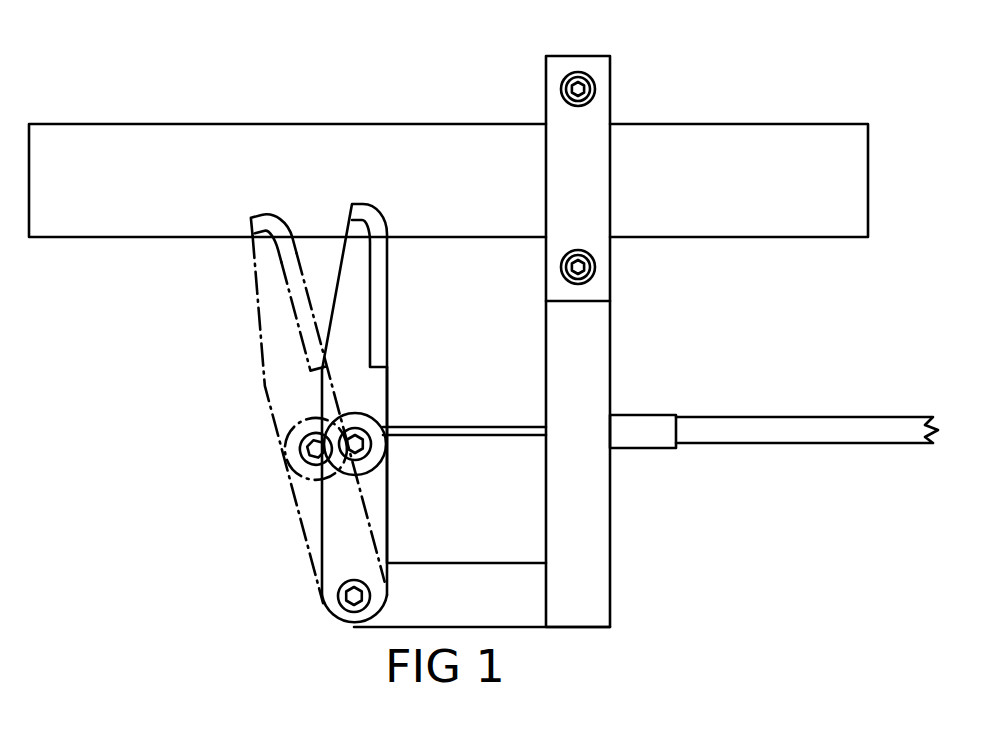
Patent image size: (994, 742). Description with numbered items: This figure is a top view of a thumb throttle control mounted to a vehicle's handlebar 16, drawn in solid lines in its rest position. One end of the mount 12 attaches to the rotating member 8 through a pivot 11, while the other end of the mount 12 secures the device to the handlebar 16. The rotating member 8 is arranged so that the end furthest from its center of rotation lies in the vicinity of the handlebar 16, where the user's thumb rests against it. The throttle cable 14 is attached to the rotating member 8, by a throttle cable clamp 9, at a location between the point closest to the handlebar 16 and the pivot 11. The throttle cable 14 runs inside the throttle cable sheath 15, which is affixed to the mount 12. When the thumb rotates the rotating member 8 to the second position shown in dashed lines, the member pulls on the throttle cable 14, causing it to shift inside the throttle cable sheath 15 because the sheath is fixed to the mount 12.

The rotating member 8 is at (352, 378).
The throttle cable clamp 9 is at (342, 453).
The pivot 11 is at (338, 597).
The mount 12 is at (579, 353).
The throttle cable 14 is at (475, 428).
The throttle cable sheath 15 is at (723, 430).
The handlebar 16 is at (242, 180).